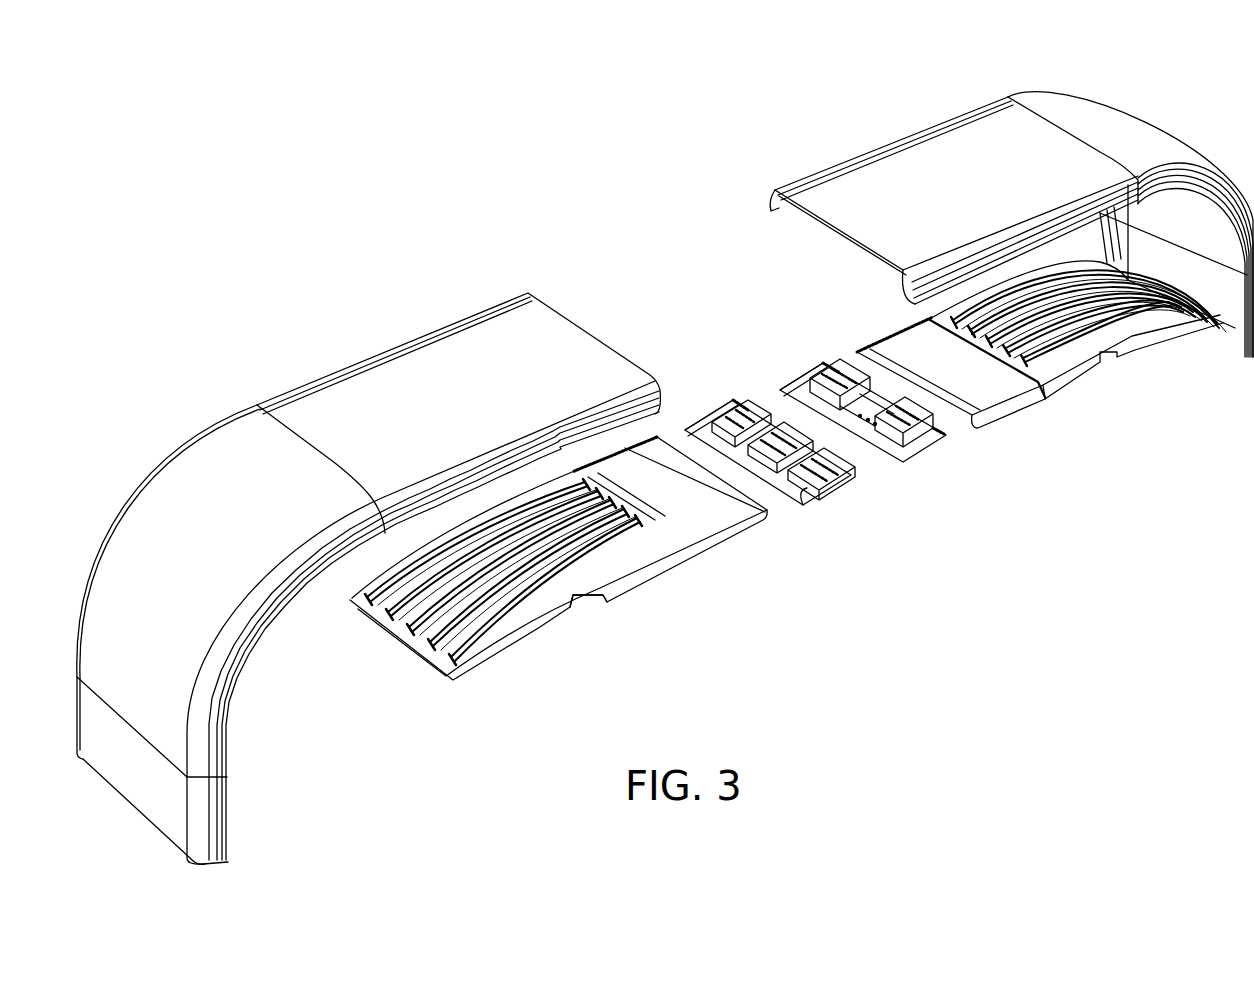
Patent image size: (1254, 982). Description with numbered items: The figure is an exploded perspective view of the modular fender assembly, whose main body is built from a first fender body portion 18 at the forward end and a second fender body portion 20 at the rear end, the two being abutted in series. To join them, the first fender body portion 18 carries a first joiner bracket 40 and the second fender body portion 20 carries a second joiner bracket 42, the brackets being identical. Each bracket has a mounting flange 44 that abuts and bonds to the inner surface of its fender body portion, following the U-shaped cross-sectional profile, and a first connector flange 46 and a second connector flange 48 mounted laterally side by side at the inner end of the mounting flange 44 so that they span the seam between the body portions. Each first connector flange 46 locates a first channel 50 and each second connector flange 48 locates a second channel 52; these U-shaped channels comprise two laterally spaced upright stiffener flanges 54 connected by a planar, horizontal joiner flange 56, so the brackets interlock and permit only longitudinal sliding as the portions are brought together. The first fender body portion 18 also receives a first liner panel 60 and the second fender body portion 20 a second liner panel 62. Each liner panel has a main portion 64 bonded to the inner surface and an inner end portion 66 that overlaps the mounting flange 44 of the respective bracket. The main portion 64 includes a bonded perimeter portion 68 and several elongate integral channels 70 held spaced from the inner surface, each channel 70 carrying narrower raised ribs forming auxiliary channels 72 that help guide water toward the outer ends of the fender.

The first fender body portion 18 is at (337, 278).
The second fender body portion 20 is at (890, 106).
The first joiner bracket 40 is at (860, 464).
The second joiner bracket 42 is at (858, 420).
The mounting flange 44 is at (797, 462).
The first connector flange 46 is at (730, 413).
The second connector flange 48 is at (807, 382).
The first channel 50 is at (747, 432).
The second channel 52 is at (797, 462).
The upright stiffener flanges 54 is at (808, 402).
The joiner flange 56 is at (830, 402).
The first liner panel 60 is at (795, 528).
The second liner panel 62 is at (1071, 405).
The main portion 64 is at (567, 602).
The inner end portion 66 is at (697, 523).
The perimeter portion 68 is at (487, 640).
The integral channels 70 is at (500, 610).
The auxiliary channels 72 is at (603, 563).